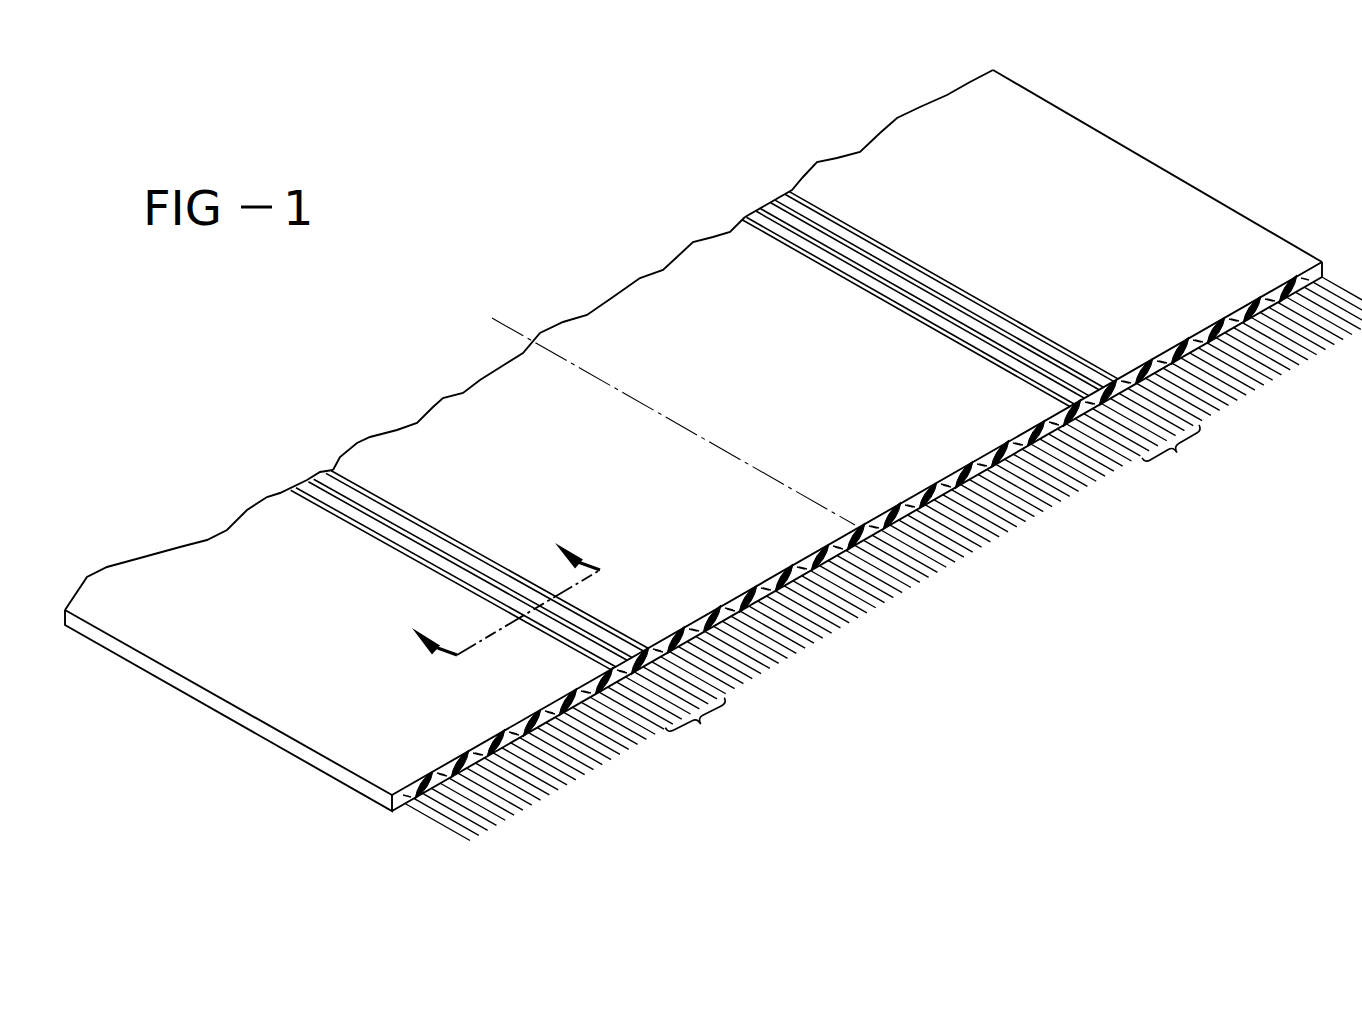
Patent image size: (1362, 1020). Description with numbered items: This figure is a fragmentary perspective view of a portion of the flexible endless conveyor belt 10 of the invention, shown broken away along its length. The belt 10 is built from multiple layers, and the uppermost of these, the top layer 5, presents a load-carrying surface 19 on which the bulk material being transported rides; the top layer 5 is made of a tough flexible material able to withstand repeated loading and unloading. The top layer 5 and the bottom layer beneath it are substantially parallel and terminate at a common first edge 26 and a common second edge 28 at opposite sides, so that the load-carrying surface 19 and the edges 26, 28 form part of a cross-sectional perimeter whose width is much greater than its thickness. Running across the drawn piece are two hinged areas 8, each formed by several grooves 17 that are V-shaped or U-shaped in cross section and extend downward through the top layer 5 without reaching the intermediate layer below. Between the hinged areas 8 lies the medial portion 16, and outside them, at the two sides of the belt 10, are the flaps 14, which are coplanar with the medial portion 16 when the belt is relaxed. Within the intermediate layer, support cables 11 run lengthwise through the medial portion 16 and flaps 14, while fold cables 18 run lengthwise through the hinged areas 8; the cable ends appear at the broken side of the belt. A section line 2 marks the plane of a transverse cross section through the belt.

The section line 2- 2 is at (623, 486).
The top layer 5 is at (1087, 132).
The hinged areas 8 is at (664, 379).
The flexible endless conveyor belt 10 is at (597, 240).
The support cables 11 is at (455, 826).
The flaps 14 is at (207, 572).
The medial portion 16 is at (447, 430).
The grooves 17 is at (288, 493).
The fold cables 18 is at (938, 592).
The load-carrying surface 19 is at (1007, 108).
The first edge 26 is at (285, 742).
The second edge 28 is at (1178, 166).